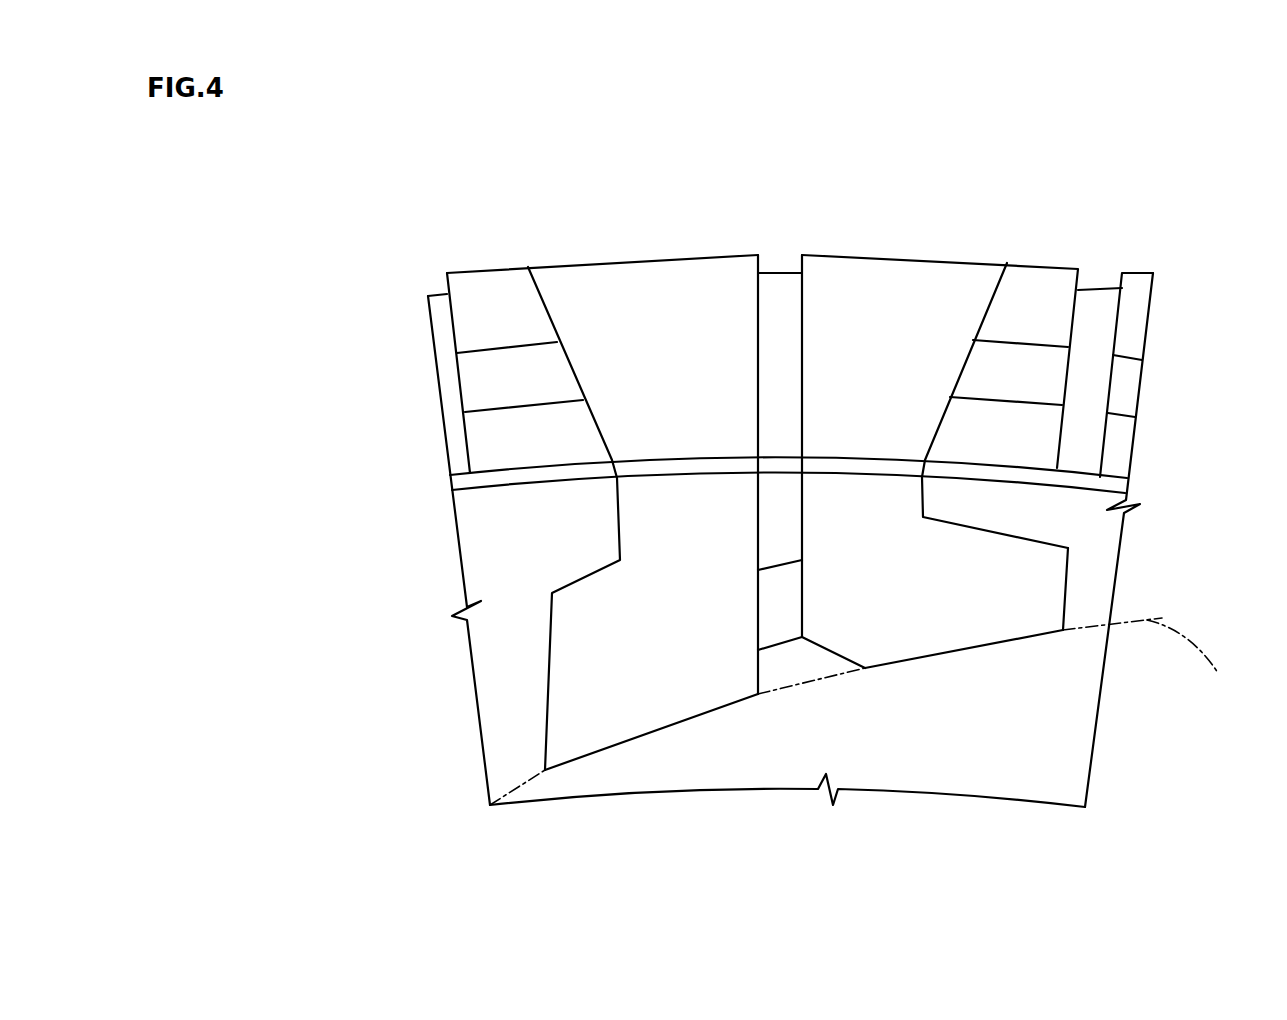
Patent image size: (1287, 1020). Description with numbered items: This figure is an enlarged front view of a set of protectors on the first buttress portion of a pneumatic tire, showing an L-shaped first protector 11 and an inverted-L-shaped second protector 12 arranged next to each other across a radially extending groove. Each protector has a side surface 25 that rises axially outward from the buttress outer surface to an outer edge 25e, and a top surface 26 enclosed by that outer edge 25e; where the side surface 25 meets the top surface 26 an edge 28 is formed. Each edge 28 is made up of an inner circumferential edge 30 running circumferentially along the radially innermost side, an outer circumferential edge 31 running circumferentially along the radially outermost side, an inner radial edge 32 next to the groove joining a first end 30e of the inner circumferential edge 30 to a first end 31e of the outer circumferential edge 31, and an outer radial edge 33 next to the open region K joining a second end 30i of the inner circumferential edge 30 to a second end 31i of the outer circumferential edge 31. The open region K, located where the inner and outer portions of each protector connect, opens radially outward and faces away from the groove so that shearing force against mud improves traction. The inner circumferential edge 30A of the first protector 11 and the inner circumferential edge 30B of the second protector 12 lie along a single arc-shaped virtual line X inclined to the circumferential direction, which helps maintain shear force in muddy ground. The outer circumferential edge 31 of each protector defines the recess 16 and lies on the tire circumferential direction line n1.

The first protector 11 is at (1022, 515).
The second protector 12 is at (533, 572).
The recess 16 is at (970, 470).
The side surface 25 is at (993, 652).
The outer edge 25e is at (1068, 583).
The top surface 26 is at (920, 612).
The edge 28 is at (627, 452).
The inner circumferential edge 30 is at (655, 740).
The inner circumferential edge of the first protector 30A is at (1027, 637).
The inner circumferential edge of the second protector 30B is at (598, 750).
The first end of the inner circumferential edge 30e is at (760, 667).
The second end of the inner circumferential edge 30i is at (543, 772).
The outer circumferential edge 31 is at (687, 470).
The first end of the outer circumferential edge 31e is at (757, 468).
The second end of the outer circumferential edge 31i is at (537, 478).
The inner radial edge 32 is at (803, 517).
The outer radial edge 33 is at (547, 678).
The open region K is at (548, 525).
The tire circumferential direction line n1 is at (538, 478).
The virtual line X is at (1198, 656).